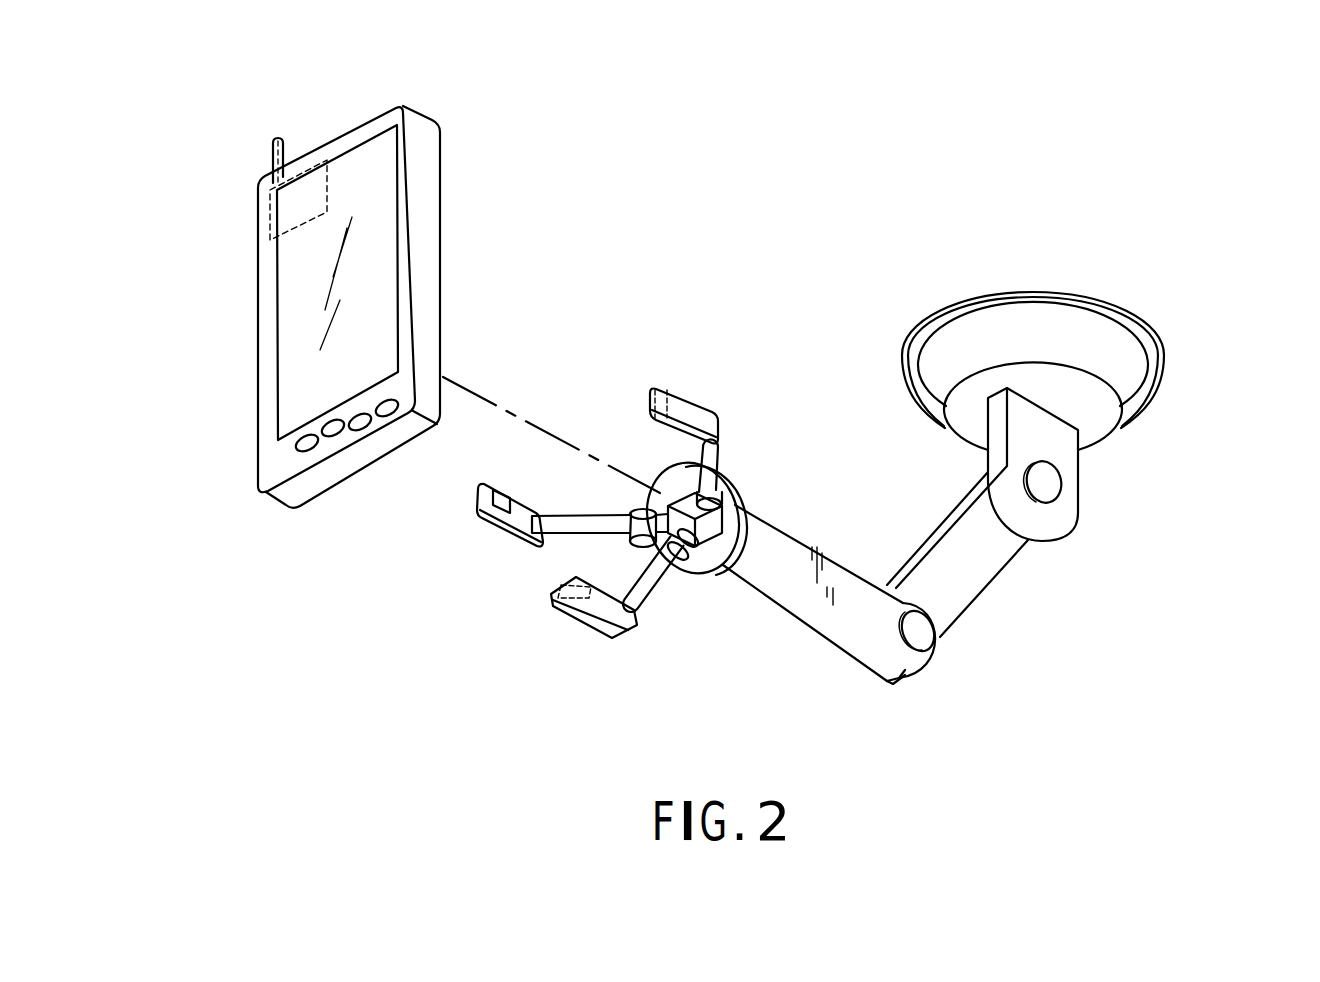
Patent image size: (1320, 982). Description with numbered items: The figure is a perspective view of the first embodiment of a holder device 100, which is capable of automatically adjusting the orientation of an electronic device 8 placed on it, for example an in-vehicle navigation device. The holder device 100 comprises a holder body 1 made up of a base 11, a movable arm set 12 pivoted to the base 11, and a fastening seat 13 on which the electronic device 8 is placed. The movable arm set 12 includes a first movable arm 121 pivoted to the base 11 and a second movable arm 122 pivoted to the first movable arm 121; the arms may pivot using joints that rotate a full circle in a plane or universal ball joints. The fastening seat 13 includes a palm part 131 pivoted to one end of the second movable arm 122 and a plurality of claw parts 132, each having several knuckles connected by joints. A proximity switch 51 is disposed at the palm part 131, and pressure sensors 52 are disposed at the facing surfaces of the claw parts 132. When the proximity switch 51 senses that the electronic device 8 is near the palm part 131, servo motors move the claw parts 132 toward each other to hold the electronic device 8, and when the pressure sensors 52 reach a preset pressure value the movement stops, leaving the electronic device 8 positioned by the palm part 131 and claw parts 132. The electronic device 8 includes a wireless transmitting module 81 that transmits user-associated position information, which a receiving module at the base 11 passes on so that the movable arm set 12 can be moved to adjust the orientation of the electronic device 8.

The holder device 100 is at (1177, 171).
The holder body 1 is at (1167, 312).
The base 11 is at (1037, 326).
The movable arm set 12 is at (945, 662).
The first movable arm 121 is at (960, 557).
The second movable arm 122 is at (808, 580).
The fastening seat 13 is at (648, 470).
The palm part 131 is at (676, 480).
The claw parts 132 is at (692, 412).
The proximity switch 51 is at (699, 527).
The pressure sensors 52 is at (662, 382).
The electronic device 8 is at (240, 330).
The wireless transmitting module 81 is at (264, 209).